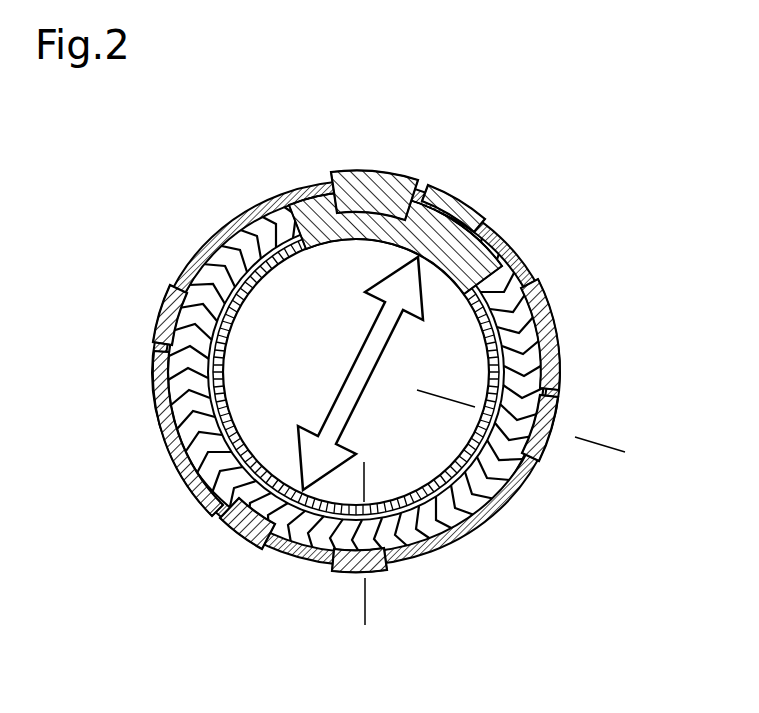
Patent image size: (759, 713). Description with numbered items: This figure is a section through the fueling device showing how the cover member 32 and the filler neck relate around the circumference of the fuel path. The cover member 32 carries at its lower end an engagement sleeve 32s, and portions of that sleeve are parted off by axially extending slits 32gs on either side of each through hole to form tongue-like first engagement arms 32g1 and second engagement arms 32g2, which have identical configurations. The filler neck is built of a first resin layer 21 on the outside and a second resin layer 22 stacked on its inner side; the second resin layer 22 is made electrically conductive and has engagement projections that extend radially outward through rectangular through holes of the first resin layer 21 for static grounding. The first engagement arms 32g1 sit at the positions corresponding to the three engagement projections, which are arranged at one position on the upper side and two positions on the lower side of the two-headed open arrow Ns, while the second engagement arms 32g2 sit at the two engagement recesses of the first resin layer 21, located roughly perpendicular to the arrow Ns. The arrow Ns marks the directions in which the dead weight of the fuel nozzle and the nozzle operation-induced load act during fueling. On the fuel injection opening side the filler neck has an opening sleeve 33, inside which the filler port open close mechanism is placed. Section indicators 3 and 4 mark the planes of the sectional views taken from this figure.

The two-headed open arrow Ns is at (377, 340).
The first resin layer 21 is at (528, 272).
The second resin layer 22 is at (558, 350).
The cover member 32 is at (546, 303).
The engagement sleeve 32s is at (395, 229).
The first engagement arm 32g1 is at (465, 208).
The second engagement arm 32g2 is at (160, 303).
The slit 32gs is at (178, 284).
The opening sleeve 33 is at (482, 528).
The section line 3 is at (367, 482).
The section line 4 is at (446, 405).